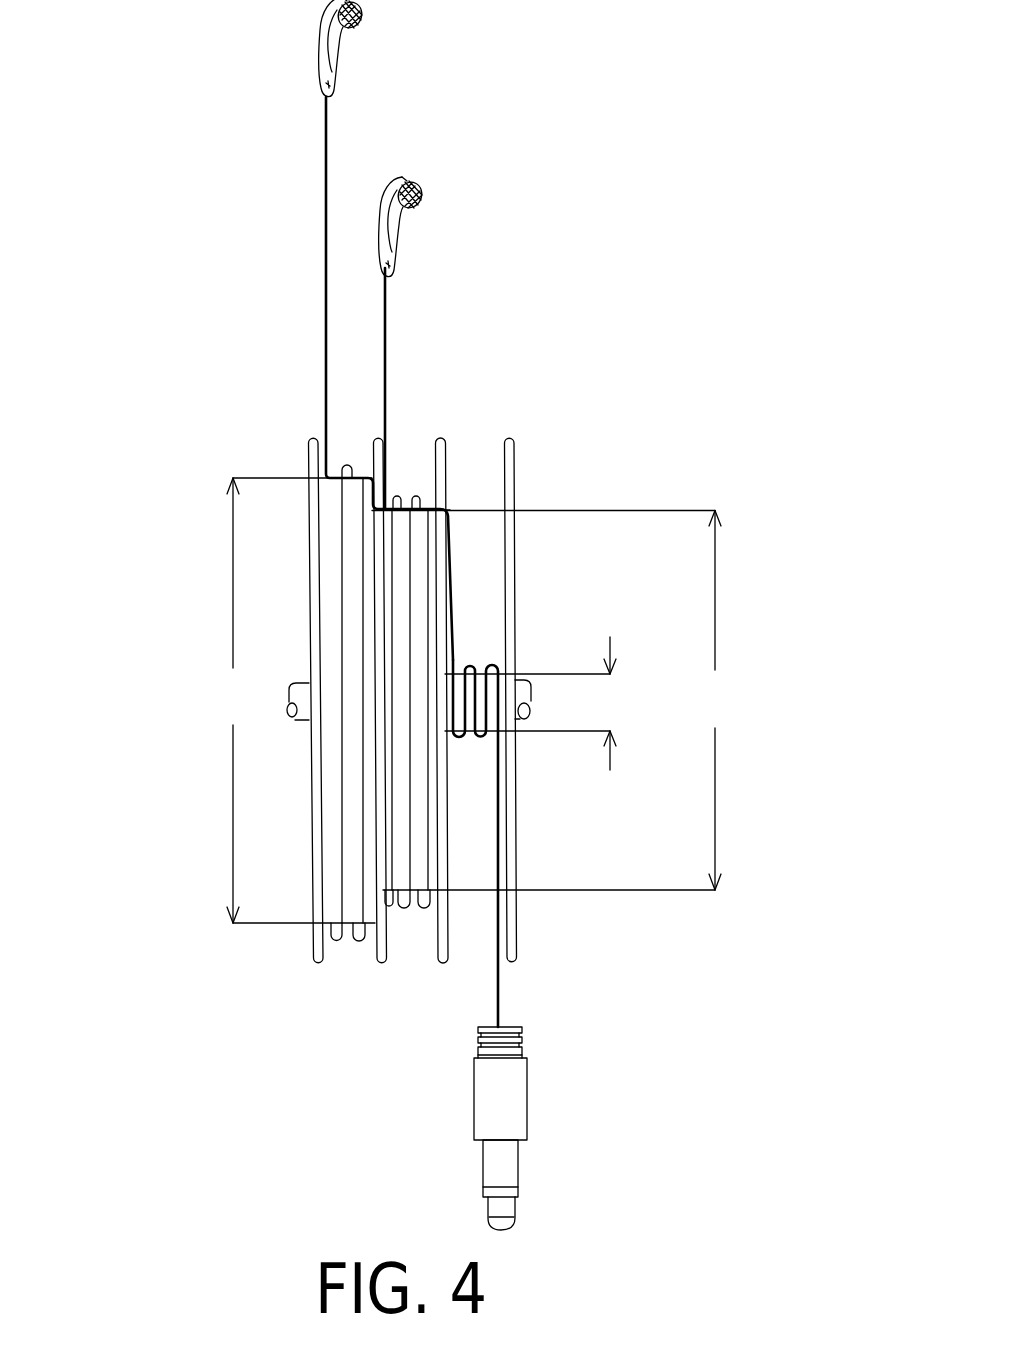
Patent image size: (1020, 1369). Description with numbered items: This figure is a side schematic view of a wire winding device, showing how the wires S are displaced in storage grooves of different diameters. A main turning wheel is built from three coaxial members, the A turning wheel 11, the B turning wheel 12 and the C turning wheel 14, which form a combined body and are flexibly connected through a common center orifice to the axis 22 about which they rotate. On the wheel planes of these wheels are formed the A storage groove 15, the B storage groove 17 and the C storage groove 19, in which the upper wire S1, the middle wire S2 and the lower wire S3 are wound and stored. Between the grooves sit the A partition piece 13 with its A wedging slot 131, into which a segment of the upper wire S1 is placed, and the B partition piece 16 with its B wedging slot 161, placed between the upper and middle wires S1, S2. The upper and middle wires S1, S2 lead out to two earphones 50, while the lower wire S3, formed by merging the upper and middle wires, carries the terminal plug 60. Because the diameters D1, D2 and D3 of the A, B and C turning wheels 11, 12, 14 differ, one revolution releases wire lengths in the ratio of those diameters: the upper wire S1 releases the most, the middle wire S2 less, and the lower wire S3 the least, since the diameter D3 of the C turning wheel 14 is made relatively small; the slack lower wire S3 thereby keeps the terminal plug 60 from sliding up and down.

The A turning wheel 11 is at (333, 870).
The B turning wheel 12 is at (415, 867).
The A partition piece 13 is at (378, 438).
The A wedging slot 131 is at (343, 468).
The C turning wheel 14 is at (490, 703).
The A storage groove 15 is at (350, 452).
The B partition piece 16 is at (443, 467).
The B wedging slot 161 is at (445, 509).
The B storage groove 17 is at (410, 470).
The C storage groove 19 is at (485, 600).
The axis 22 is at (292, 710).
The earphone 50 is at (332, 55).
The terminal plug 60 is at (515, 1195).
The wire S is at (532, 960).
The upper wire S1 is at (342, 940).
The middle wire S2 is at (404, 907).
The lower wire S3 is at (501, 978).
The diameter of the A turning wheel D1 is at (238, 700).
The diameter of the B turning wheel D2 is at (715, 701).
The diameter of the C turning wheel D3 is at (551, 703).